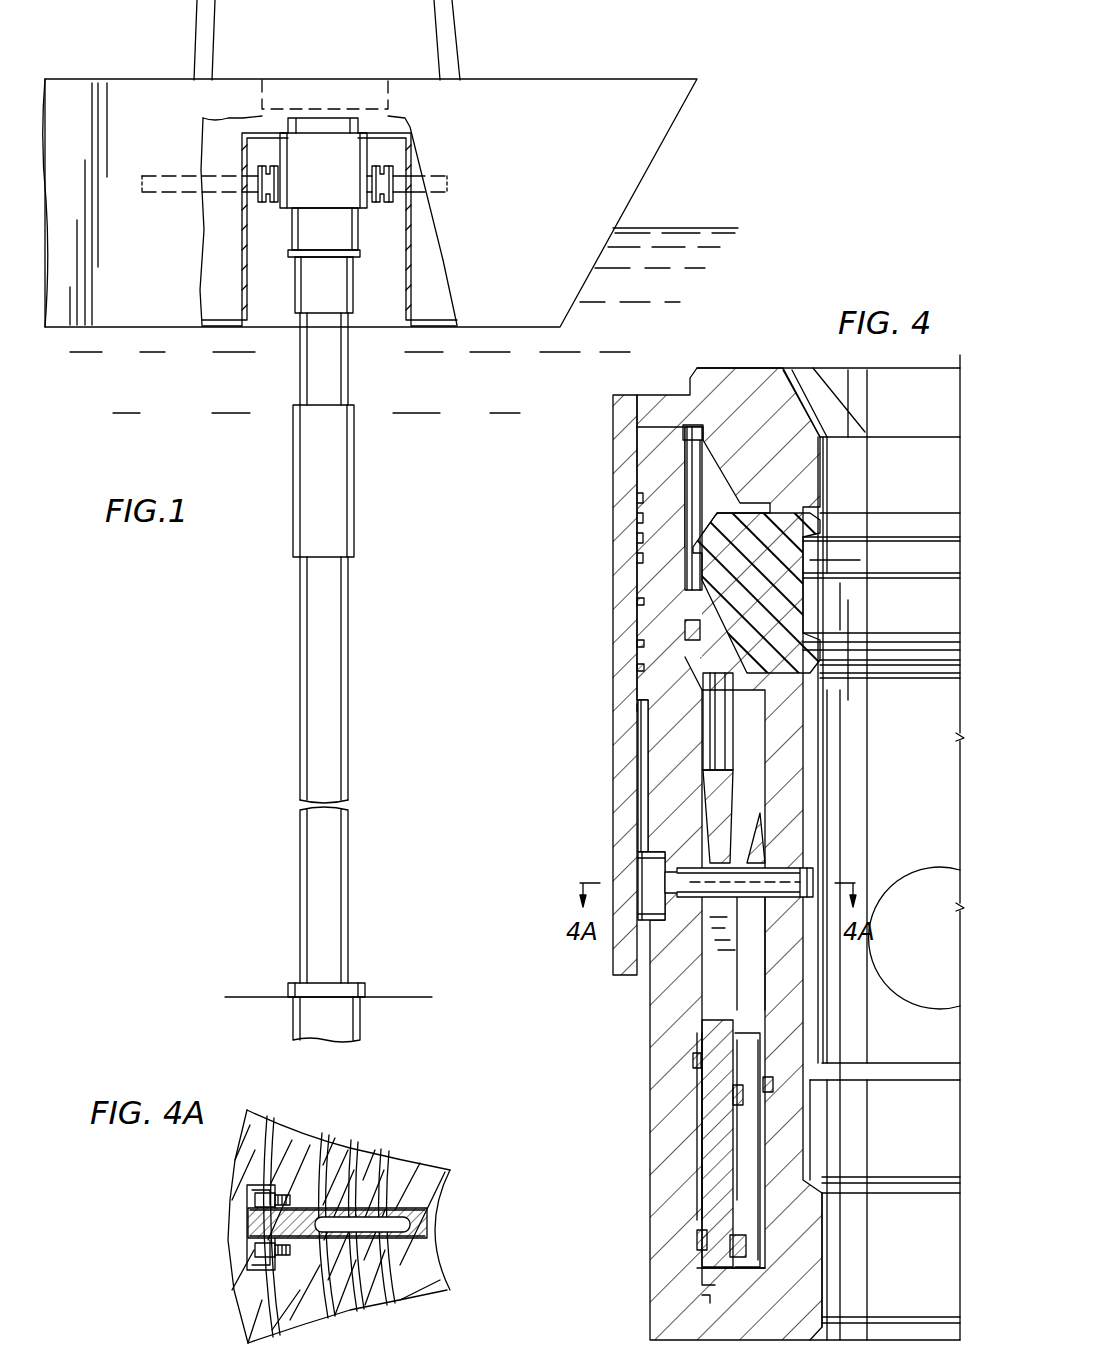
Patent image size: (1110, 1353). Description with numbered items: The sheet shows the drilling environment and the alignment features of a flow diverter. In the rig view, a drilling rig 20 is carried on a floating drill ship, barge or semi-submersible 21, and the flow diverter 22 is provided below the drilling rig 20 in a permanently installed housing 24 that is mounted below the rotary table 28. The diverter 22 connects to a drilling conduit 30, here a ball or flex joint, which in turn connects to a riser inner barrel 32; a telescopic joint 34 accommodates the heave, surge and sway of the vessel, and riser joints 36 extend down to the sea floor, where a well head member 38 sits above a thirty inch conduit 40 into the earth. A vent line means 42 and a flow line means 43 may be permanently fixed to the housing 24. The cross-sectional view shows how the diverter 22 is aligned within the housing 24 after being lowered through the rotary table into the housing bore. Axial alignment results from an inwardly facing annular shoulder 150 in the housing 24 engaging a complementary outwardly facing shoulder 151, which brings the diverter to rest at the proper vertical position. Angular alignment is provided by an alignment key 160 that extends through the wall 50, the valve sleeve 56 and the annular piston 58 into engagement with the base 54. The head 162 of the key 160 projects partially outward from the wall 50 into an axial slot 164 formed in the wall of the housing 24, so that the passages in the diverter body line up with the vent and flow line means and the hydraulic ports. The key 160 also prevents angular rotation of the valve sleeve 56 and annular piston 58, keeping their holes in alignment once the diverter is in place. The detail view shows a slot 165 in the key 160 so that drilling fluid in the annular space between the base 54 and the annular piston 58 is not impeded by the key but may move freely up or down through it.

In FIG. 1, the drilling rig 20 is at (472, 62).
In FIG. 1, the floating drill ship, barge or semi-submersible 21 is at (672, 130).
In FIG. 1, the flow diverter 22 is at (365, 240).
In FIG. 4, the flow diverter 22 is at (716, 348).
In FIG. 1, the permanently installed housing 24 is at (367, 157).
In FIG. 4, the permanently installed housing 24 is at (612, 460).
In FIG. 1, the rotary table 28 is at (284, 92).
In FIG. 1, the drilling conduit 30 is at (353, 290).
In FIG. 1, the riser inner barrel 32 is at (340, 380).
In FIG. 1, the telescopic joint 34 is at (345, 500).
In FIG. 1, the riser joints 36 is at (300, 750).
In FIG. 1, the well head member 38 is at (292, 985).
In FIG. 1, the thirty inch conduit 40 is at (362, 1027).
In FIG. 1, the vent line means 42 is at (252, 183).
In FIG. 1, the flow line means 43 is at (390, 175).
In FIG. 4, the wall 50 is at (665, 1000).
In FIG. 4, the base 54 is at (813, 823).
In FIG. 4, the valve sleeve 56 is at (703, 1038).
In FIG. 4, the annular piston 58 is at (747, 1132).
In FIG. 4, the inwardly facing annular shoulder 150 is at (640, 720).
In FIG. 4, the outwardly facing shoulder 151 is at (643, 727).
In FIG. 4, the alignment key 160 is at (777, 890).
In FIG. 4A, the alignment key 160 is at (400, 1253).
In FIG. 4, the head 162 is at (652, 847).
In FIG. 4, the axial slot 164 is at (644, 790).
In FIG. 4A, the axial slot 164 is at (247, 1188).
In FIG. 4A, the slot 165 is at (393, 1213).